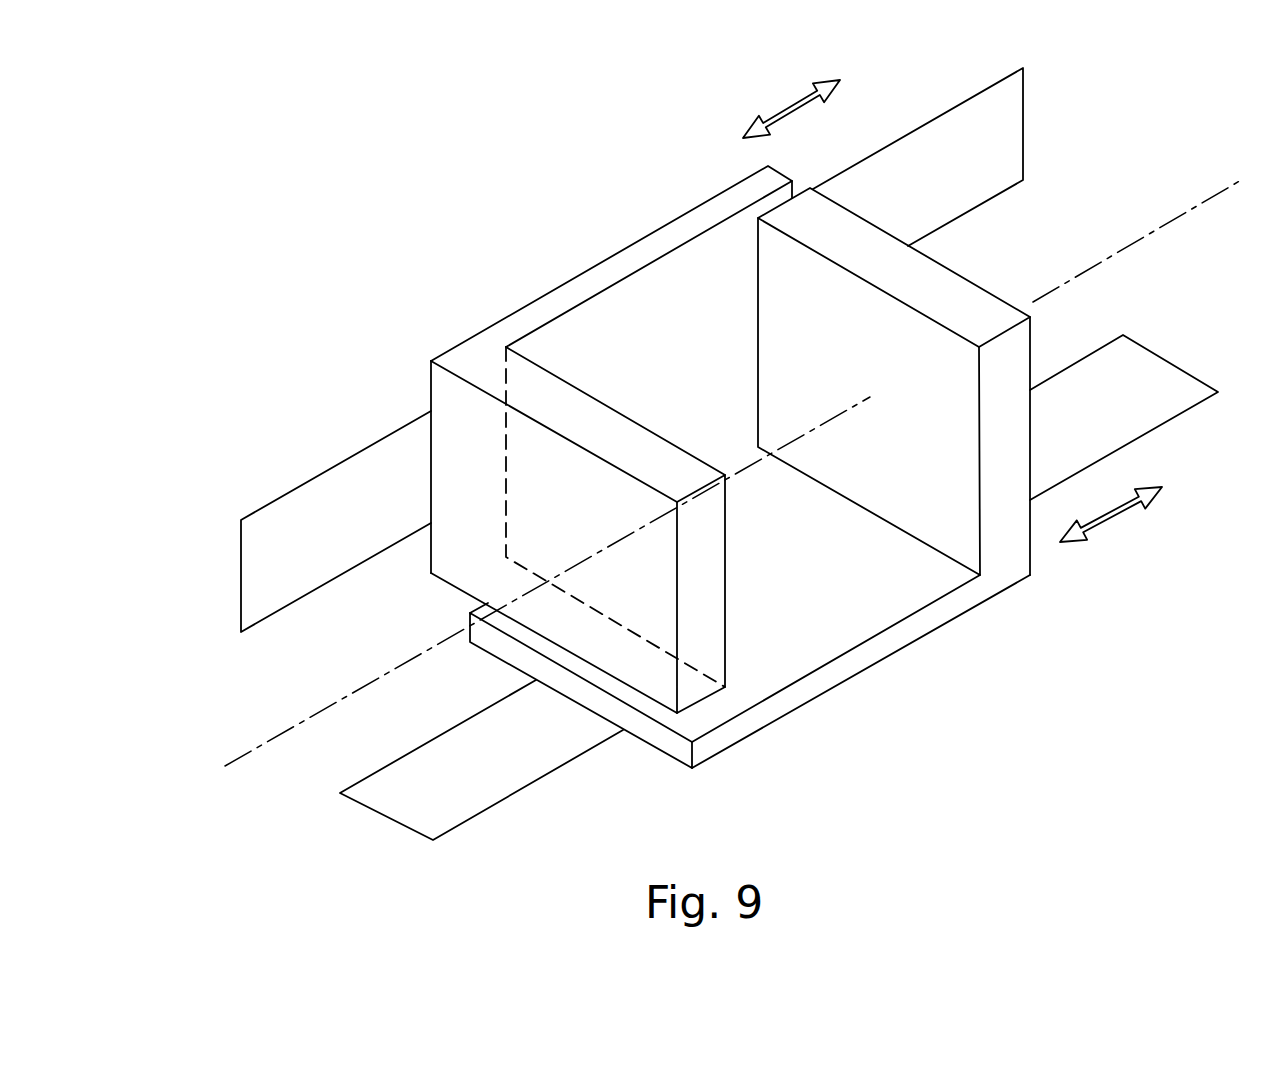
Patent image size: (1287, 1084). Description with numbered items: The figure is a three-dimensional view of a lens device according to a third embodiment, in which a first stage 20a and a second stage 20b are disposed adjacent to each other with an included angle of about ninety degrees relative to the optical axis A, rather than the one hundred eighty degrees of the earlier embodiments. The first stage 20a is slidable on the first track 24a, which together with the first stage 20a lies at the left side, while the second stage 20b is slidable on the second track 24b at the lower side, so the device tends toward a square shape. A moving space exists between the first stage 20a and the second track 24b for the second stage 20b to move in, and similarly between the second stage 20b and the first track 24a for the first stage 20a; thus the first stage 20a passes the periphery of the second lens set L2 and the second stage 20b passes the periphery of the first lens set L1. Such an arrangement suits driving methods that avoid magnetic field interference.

The first stage 20a is at (578, 288).
The second stage 20b is at (890, 638).
The first track 24a is at (252, 575).
The second track 24b is at (392, 778).
The first lens set L1 is at (710, 640).
The second lens set L2 is at (947, 280).
The optical axis A is at (719, 487).